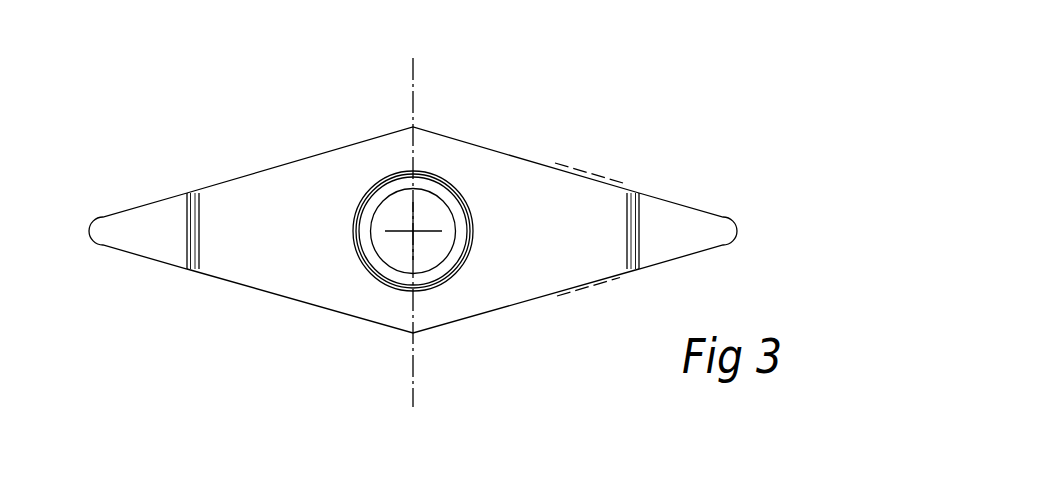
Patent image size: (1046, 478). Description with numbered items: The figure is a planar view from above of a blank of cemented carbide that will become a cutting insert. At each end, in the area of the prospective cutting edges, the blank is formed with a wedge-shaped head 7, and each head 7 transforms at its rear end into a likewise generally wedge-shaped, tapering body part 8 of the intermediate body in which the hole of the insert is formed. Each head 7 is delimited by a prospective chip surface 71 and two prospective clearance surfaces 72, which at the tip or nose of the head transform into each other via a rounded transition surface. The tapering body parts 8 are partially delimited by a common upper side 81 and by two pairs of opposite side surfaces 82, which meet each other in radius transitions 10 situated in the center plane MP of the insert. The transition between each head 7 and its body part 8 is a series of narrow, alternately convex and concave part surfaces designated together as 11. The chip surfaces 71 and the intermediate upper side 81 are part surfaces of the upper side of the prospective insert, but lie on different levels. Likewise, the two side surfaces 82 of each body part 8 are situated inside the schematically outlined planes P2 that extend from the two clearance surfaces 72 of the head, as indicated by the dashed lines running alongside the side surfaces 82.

The wedge-shaped head 7 is at (413, 236).
The wedge-shaped body part 8 is at (413, 236).
The radius transition 10 is at (413, 335).
The transition part surfaces 11 is at (195, 223).
The chip surface 71 is at (170, 243).
The clearance surface 72 is at (689, 207).
The upper side 81 is at (536, 240).
The side surface 82 is at (470, 143).
The plane P2 is at (577, 164).
The center plane MP is at (413, 87).